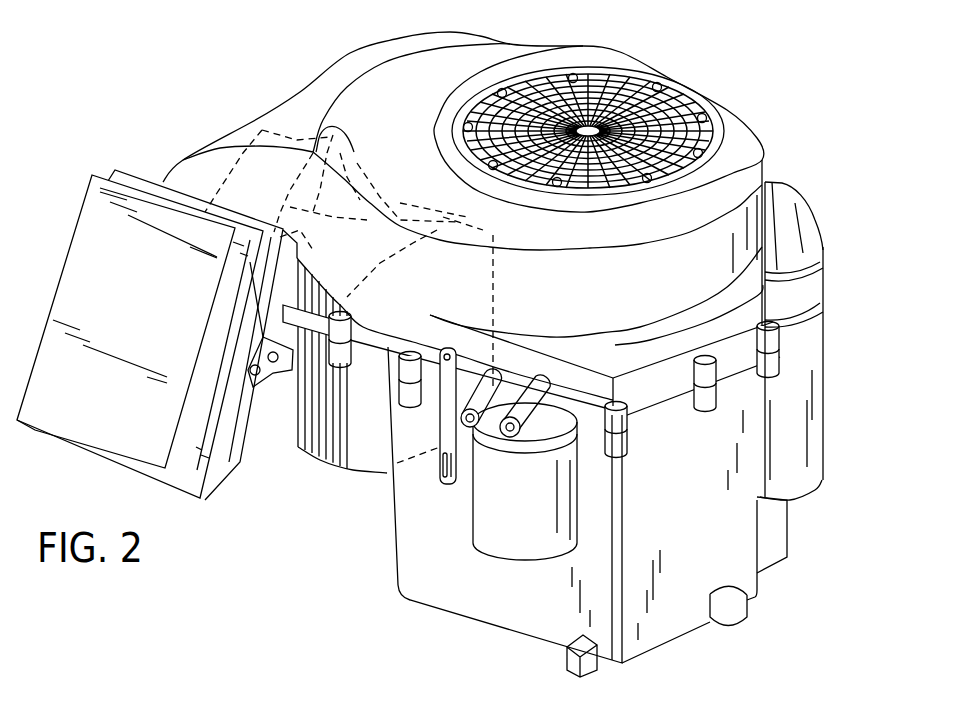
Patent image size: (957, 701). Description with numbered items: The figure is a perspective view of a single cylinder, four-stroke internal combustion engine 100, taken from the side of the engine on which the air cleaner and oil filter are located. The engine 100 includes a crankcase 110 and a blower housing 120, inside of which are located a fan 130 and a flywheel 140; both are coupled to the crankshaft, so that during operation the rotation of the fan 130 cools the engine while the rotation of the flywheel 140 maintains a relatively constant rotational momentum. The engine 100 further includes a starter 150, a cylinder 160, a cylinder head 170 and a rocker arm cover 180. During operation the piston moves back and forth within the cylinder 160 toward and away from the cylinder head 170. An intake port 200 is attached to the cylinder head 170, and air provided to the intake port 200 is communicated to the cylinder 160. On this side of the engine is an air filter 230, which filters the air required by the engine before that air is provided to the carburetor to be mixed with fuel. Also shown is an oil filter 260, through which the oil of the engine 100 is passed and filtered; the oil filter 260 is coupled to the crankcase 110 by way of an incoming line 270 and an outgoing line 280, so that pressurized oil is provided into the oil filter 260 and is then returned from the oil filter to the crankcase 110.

The engine 100 is at (250, 79).
The crankcase 110 is at (467, 617).
The blower housing 120 is at (595, 65).
The fan 130 is at (737, 103).
The flywheel 140 is at (599, 129).
The starter 150 is at (813, 495).
The cylinder 160 is at (330, 462).
The cylinder head 170 is at (275, 385).
The rocker arm cover 180 is at (250, 125).
The intake port 200 is at (250, 387).
The air filter 230 is at (92, 447).
The oil filter 260 is at (537, 560).
The incoming line 270 is at (480, 392).
The outgoing line 280 is at (536, 432).